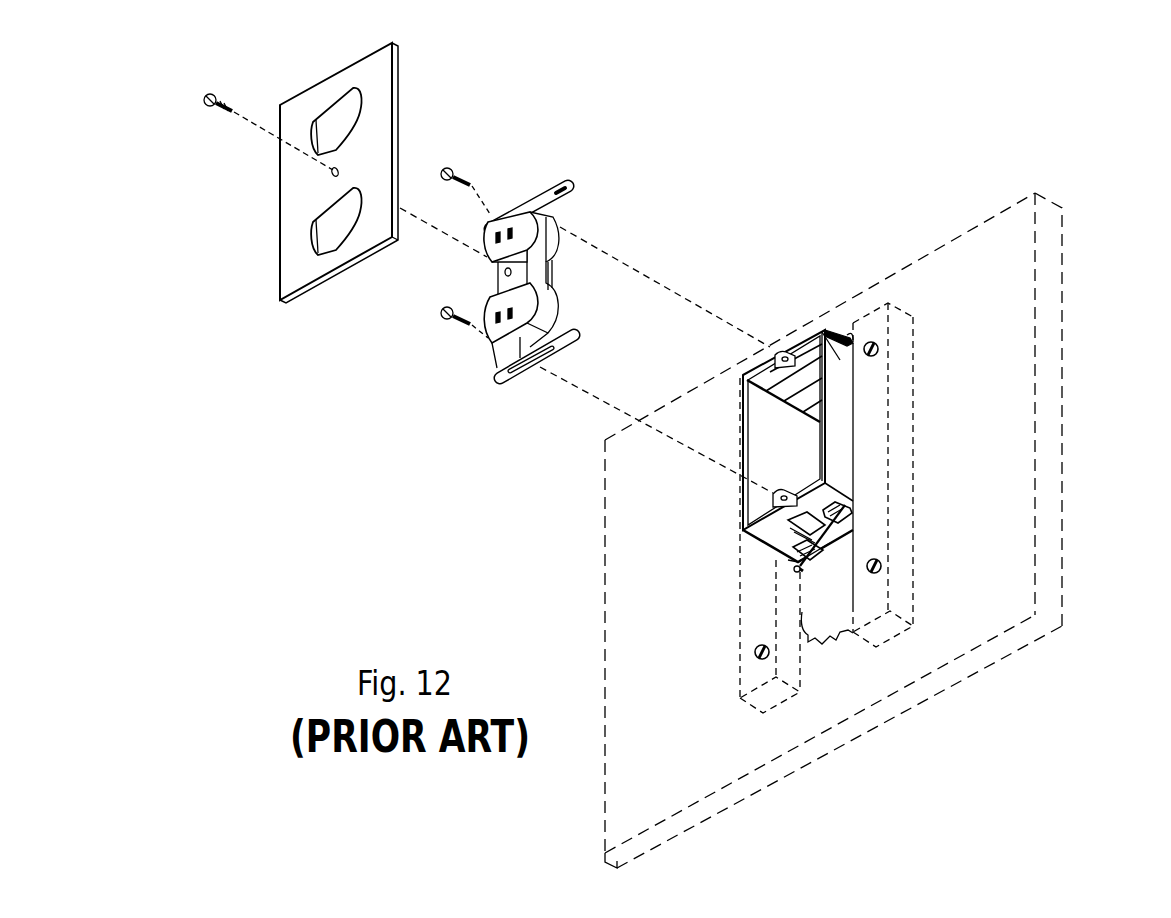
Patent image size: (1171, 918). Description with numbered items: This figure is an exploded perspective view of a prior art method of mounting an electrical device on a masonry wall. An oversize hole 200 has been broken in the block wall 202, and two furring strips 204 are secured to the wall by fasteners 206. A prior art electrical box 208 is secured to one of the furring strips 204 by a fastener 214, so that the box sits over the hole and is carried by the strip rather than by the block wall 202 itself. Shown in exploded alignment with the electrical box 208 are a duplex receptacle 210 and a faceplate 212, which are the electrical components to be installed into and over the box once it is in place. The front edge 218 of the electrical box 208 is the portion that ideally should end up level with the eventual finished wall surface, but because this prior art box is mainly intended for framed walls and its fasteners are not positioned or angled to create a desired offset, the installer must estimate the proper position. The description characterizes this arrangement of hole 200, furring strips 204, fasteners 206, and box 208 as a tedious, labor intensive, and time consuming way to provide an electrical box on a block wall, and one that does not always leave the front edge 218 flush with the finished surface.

The oversize hole 200 is at (847, 335).
The block wall 202 is at (691, 753).
The furring strips 204 is at (875, 423).
The fasteners 206 is at (755, 652).
The prior art electrical box 208 is at (745, 358).
The duplex receptacle 210 is at (520, 338).
The faceplate 212 is at (340, 253).
The fastener 214 is at (847, 540).
The front edge 218 is at (742, 500).